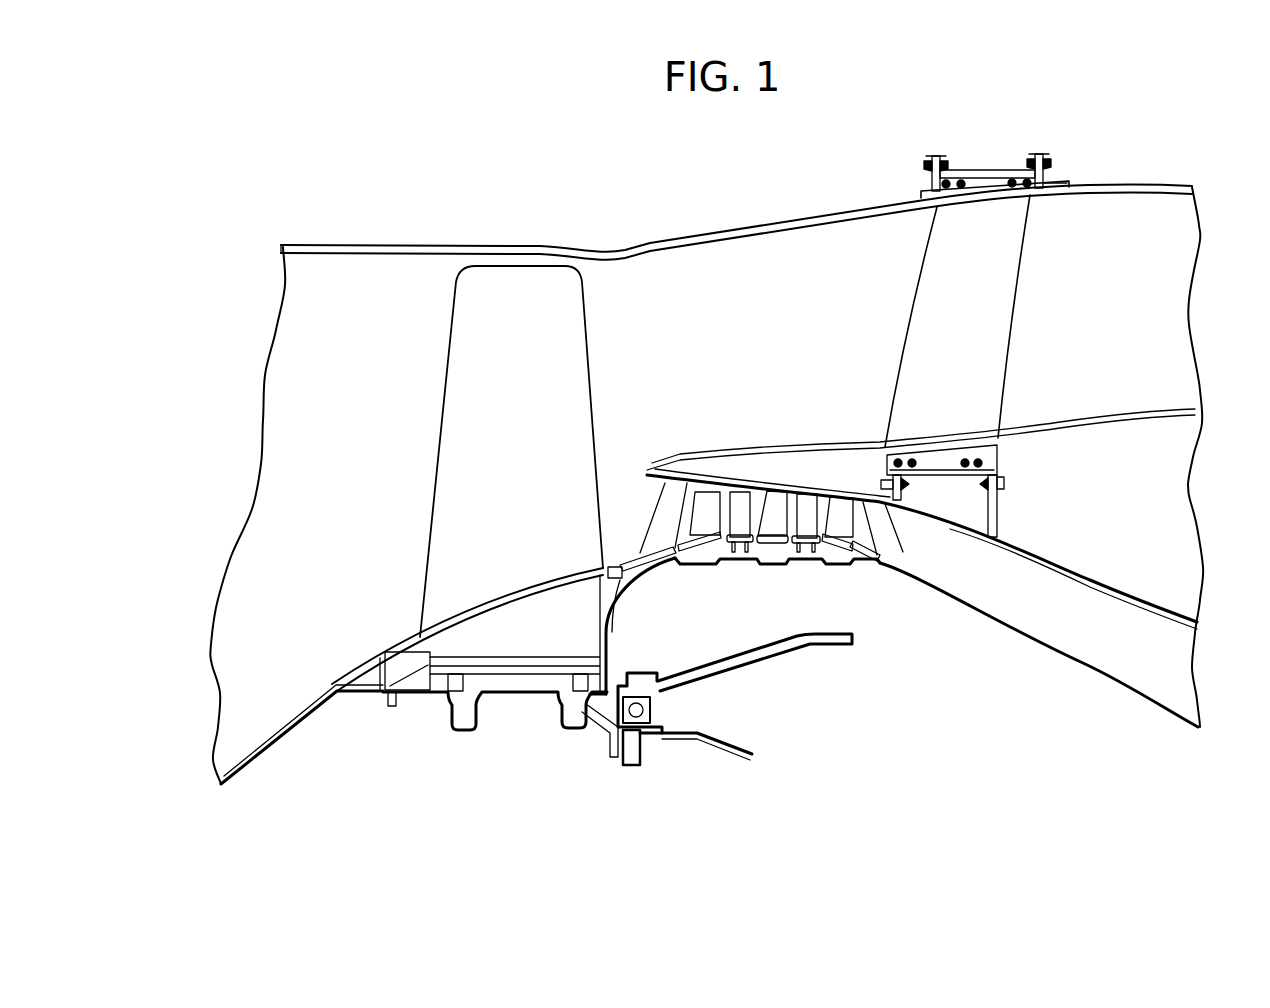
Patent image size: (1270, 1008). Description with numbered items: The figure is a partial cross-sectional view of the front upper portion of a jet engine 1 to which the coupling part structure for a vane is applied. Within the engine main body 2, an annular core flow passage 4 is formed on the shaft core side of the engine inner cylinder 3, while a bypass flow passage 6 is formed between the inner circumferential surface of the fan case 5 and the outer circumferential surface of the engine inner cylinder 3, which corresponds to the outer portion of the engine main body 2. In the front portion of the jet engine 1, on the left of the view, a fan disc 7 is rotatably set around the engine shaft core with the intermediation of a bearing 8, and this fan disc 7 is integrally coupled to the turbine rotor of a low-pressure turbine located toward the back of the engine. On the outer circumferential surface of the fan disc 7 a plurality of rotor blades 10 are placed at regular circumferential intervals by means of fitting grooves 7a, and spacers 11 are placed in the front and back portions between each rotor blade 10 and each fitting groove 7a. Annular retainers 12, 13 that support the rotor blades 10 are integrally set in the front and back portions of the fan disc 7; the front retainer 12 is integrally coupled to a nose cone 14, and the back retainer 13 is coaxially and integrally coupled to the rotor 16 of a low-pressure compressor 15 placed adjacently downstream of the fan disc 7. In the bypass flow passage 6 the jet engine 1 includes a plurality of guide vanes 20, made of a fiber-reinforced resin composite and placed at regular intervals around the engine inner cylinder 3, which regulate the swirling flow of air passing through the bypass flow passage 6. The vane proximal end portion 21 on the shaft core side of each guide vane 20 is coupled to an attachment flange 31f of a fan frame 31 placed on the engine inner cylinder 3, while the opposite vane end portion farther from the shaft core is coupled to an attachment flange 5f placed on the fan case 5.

The jet engine 1 is at (288, 206).
The engine main body 2 is at (374, 419).
The engine inner cylinder 3 is at (1100, 420).
The core flow passage 4 is at (985, 602).
The fan case 5 is at (785, 216).
The attachment flange 5f is at (930, 184).
The bypass flow passage 6 is at (852, 252).
The fan disc 7 is at (462, 732).
The fitting groove 7a is at (505, 678).
The bearing 8 is at (658, 707).
The rotor blade 10 is at (450, 338).
The spacer 11 is at (447, 678).
The retainer 12 is at (385, 672).
The retainer 13 is at (610, 656).
The nose cone 14 is at (280, 717).
The low-pressure compressor 15 is at (792, 497).
The rotor 16 is at (712, 564).
The guide vane 20 is at (912, 325).
The vane proximal end portion 21 is at (978, 445).
The fan frame 31 is at (1000, 527).
The attachment flange 31f is at (878, 492).